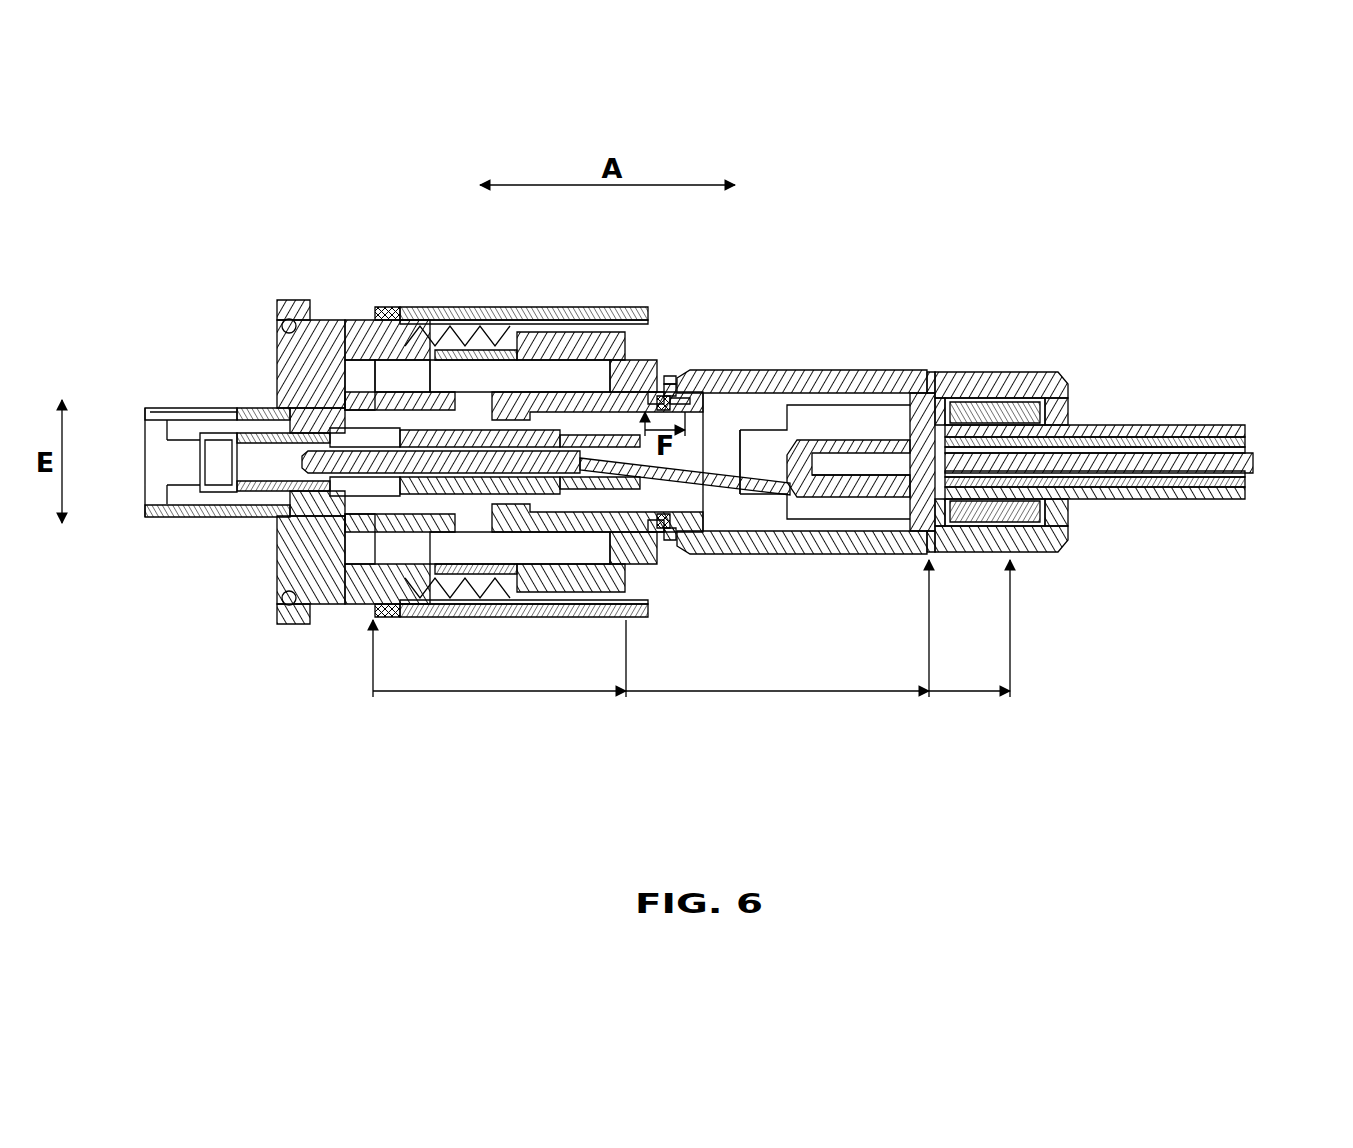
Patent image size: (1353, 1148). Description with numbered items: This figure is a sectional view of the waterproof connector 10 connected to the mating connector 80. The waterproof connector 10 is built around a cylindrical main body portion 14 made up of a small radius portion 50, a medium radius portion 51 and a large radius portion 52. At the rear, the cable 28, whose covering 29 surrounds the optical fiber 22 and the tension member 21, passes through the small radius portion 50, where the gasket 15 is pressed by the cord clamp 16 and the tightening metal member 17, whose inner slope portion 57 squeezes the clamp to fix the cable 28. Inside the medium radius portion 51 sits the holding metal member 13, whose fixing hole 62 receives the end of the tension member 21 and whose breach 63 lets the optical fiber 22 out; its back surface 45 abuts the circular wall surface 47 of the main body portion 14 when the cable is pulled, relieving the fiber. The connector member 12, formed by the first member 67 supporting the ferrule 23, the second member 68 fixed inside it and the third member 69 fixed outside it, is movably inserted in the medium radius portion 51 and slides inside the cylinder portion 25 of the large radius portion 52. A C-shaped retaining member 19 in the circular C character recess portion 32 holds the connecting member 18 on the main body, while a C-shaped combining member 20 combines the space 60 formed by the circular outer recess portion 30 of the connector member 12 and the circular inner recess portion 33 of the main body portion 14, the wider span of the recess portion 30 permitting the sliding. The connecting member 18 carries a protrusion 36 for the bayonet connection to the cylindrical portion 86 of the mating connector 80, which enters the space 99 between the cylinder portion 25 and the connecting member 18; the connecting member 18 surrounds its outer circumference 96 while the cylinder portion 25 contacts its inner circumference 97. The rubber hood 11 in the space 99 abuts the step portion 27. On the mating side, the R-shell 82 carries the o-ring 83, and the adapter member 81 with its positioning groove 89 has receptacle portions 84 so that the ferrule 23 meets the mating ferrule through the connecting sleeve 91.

The waterproof connector 10 is at (1214, 243).
The rubber hood 11 is at (512, 318).
The connector member 12 is at (580, 345).
The holding metal member 13 is at (865, 445).
The main body portion 14 is at (795, 370).
The gasket 15 is at (965, 555).
The cord clamp 16 is at (1042, 404).
The tightening metal member 17 is at (1062, 372).
The connecting member 18 is at (432, 306).
The retaining member 19 is at (660, 392).
The combining member 20 is at (655, 370).
The tension member 21 is at (1212, 424).
The optical fiber 22 is at (735, 520).
The ferrule 23 is at (330, 463).
The cylinder portion 25 is at (485, 350).
The step portion 27 is at (530, 400).
The cable 28 is at (1240, 480).
The covering 29 is at (1242, 438).
The circular outer recess portion 30 is at (672, 404).
The circular C character recess portion 32 is at (667, 378).
The circular inner recess portion 33 is at (676, 400).
The protrusion 36 is at (381, 306).
The back surface 45 is at (932, 372).
The circular wall surface 47 is at (918, 392).
The small radius portion 50 is at (969, 643).
The medium radius portion 51 is at (777, 643).
The large radius portion 52 is at (499, 673).
The slope portion 57 is at (1048, 555).
The space 60 is at (640, 364).
The fixing hole 62 is at (838, 480).
The breach 63 is at (768, 440).
The first member 67 is at (385, 428).
The second member 68 is at (535, 500).
The third member 69 is at (570, 500).
The mating connector 80 is at (133, 366).
The adapter member 81 is at (165, 406).
The R-shell 82 is at (290, 300).
The o-ring 83 is at (278, 345).
The receptacle portion 84 is at (215, 445).
The cylindrical portion 86 is at (352, 340).
The positioning groove 89 is at (193, 406).
The connecting sleeve 91 is at (235, 488).
The outer circumference 96 is at (325, 330).
The inner circumference 97 is at (340, 375).
The space 99 is at (470, 328).